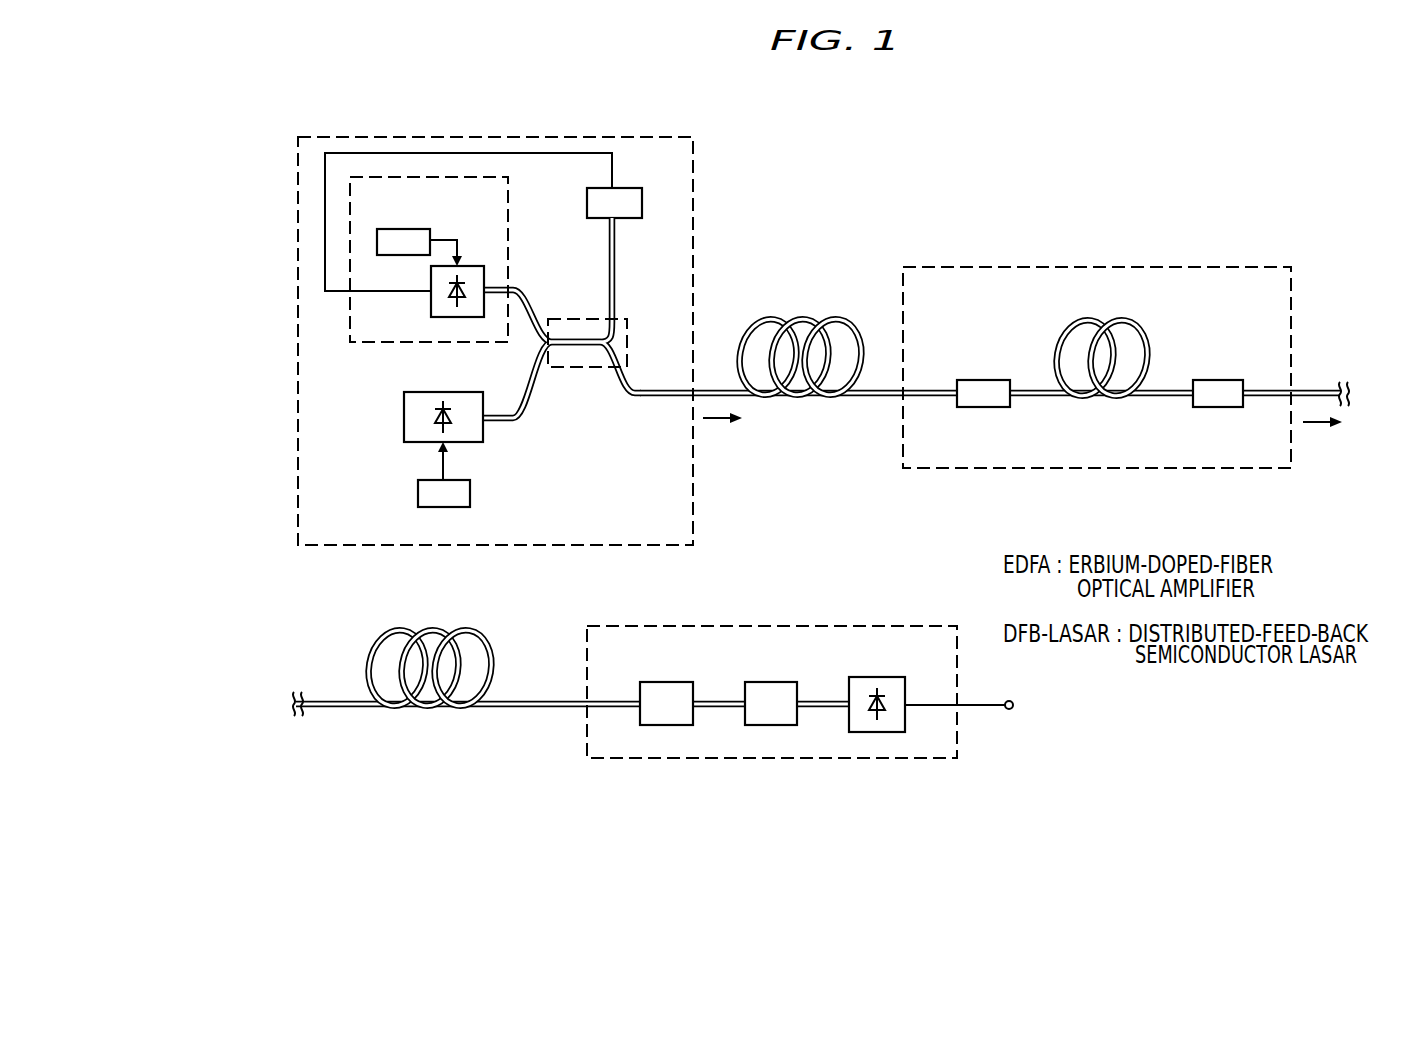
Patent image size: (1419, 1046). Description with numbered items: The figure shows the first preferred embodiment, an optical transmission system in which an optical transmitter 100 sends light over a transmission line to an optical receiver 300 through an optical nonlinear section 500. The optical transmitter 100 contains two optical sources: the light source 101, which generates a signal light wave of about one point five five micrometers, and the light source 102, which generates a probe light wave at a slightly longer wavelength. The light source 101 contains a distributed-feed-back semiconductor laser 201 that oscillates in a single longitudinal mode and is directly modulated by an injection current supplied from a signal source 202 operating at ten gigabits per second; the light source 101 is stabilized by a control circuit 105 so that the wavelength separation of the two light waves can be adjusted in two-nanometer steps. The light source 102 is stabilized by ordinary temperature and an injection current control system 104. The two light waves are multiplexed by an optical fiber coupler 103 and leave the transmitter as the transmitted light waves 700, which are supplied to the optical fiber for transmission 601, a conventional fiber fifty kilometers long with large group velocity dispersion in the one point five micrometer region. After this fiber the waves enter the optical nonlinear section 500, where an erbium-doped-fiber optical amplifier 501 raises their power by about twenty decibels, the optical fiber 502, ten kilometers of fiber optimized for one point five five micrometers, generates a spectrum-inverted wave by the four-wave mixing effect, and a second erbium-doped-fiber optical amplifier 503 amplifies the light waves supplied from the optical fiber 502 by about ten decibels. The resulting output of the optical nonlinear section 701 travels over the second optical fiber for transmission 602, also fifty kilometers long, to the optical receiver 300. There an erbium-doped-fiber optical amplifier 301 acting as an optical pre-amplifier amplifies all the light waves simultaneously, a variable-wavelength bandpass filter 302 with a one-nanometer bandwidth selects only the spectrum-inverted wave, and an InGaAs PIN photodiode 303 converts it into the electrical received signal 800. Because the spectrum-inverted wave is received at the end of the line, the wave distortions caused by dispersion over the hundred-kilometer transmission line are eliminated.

The optical transmitter 100 is at (695, 212).
The light source for a signal light wave 101 is at (440, 177).
The light source for a probe light wave 102 is at (404, 397).
The optical fiber coupler 103 is at (586, 368).
The injection current control system 104 is at (470, 492).
The control circuit 105 is at (641, 195).
The distributed-feed-back semiconductor laser 201 is at (431, 311).
The signal source 202 is at (390, 229).
The optical receiver 300 is at (742, 626).
The erbium-doped-fiber optical amplifier 301 is at (648, 682).
The variable-wavelength bandpass filter 302 is at (777, 726).
The InGaAs PIN photodiode 303 is at (885, 733).
The optical nonlinear section 500 is at (1125, 267).
The erbium-doped-fiber optical amplifier 501 is at (966, 380).
The 1.55 μm-optimized optical fiber 502 is at (1118, 322).
The erbium-doped-fiber optical amplifier 503 is at (1212, 380).
The optical fiber for transmission 601 is at (820, 318).
The optical fiber for transmission 602 is at (450, 625).
The transmitted light waves 700 is at (715, 420).
The output light waves of the optical nonlinear section 701 is at (1318, 425).
The received signal 800 is at (1044, 718).